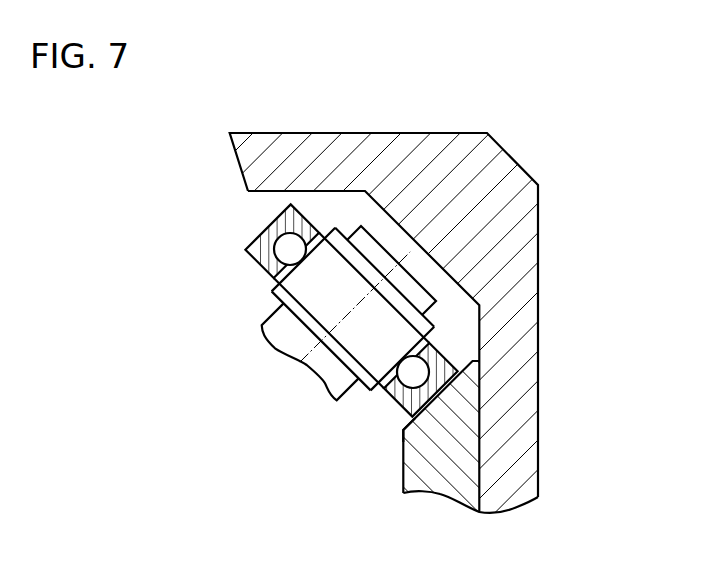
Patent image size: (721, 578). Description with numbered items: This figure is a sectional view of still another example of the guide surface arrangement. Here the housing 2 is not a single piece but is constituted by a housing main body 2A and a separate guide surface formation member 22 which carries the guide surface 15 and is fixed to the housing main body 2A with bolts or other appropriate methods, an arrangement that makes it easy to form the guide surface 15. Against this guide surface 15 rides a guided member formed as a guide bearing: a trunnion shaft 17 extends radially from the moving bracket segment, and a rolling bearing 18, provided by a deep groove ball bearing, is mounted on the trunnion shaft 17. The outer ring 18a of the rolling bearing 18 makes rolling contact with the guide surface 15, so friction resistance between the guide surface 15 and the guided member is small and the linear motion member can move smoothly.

The housing 2 is at (360, 319).
The housing main body 2A is at (513, 473).
The guide surface formation member 22 is at (463, 482).
The guide surface 15 is at (403, 423).
The trunnion shaft 17 is at (297, 332).
The rolling bearing 18 is at (314, 325).
The outer ring 18a is at (397, 405).